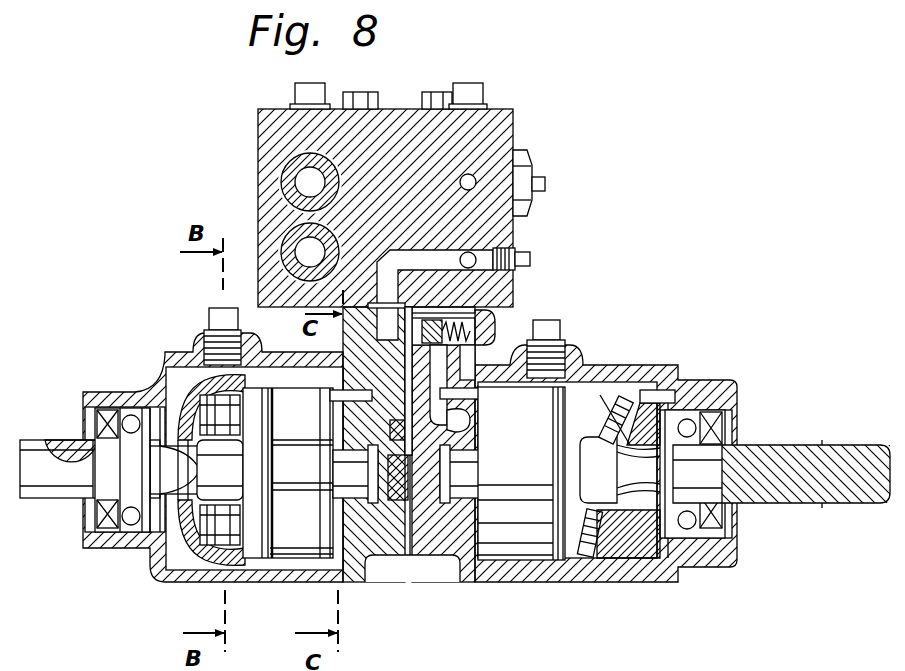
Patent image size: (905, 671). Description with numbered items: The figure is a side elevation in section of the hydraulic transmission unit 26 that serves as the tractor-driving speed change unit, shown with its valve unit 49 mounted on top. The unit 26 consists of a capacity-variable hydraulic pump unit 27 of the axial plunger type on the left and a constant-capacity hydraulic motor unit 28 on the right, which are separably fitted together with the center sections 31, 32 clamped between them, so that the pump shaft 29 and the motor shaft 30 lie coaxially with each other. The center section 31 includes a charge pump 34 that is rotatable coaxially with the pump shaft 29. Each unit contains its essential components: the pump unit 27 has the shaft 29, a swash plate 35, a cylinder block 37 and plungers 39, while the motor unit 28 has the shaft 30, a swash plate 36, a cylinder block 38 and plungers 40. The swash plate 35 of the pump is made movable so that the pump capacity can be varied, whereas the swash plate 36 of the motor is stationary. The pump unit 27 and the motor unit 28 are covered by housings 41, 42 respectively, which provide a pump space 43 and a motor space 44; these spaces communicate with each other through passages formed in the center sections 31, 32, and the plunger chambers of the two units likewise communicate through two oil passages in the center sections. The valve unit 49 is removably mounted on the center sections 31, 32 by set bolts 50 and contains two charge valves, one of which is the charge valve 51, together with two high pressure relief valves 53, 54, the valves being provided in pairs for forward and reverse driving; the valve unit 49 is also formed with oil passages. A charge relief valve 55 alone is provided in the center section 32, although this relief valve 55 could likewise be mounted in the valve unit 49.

The hydraulic transmission unit 26 is at (404, 598).
The hydraulic pump unit 27 is at (248, 512).
The hydraulic motor unit 28 is at (576, 518).
The pump shaft 29 is at (60, 498).
The motor shaft 30 is at (780, 495).
The center section 31 is at (350, 580).
The center section 32 is at (458, 574).
The charge pump 34 is at (392, 430).
The swash plate 35 is at (192, 556).
The swash plate 36 is at (616, 560).
The cylinder block 37 is at (284, 562).
The cylinder block 38 is at (526, 566).
The plungers 39 is at (219, 437).
The plungers 40 is at (600, 442).
The housing 41 is at (150, 560).
The housing 42 is at (645, 580).
The pump space 43 is at (172, 384).
The motor space 44 is at (598, 394).
The valve unit 49 is at (514, 131).
The set bolts 50 is at (436, 92).
The charge valve 51 is at (532, 168).
The high pressure relief valve 53 is at (283, 176).
The high pressure relief valve 54 is at (283, 248).
The charge relief valve 55 is at (492, 340).